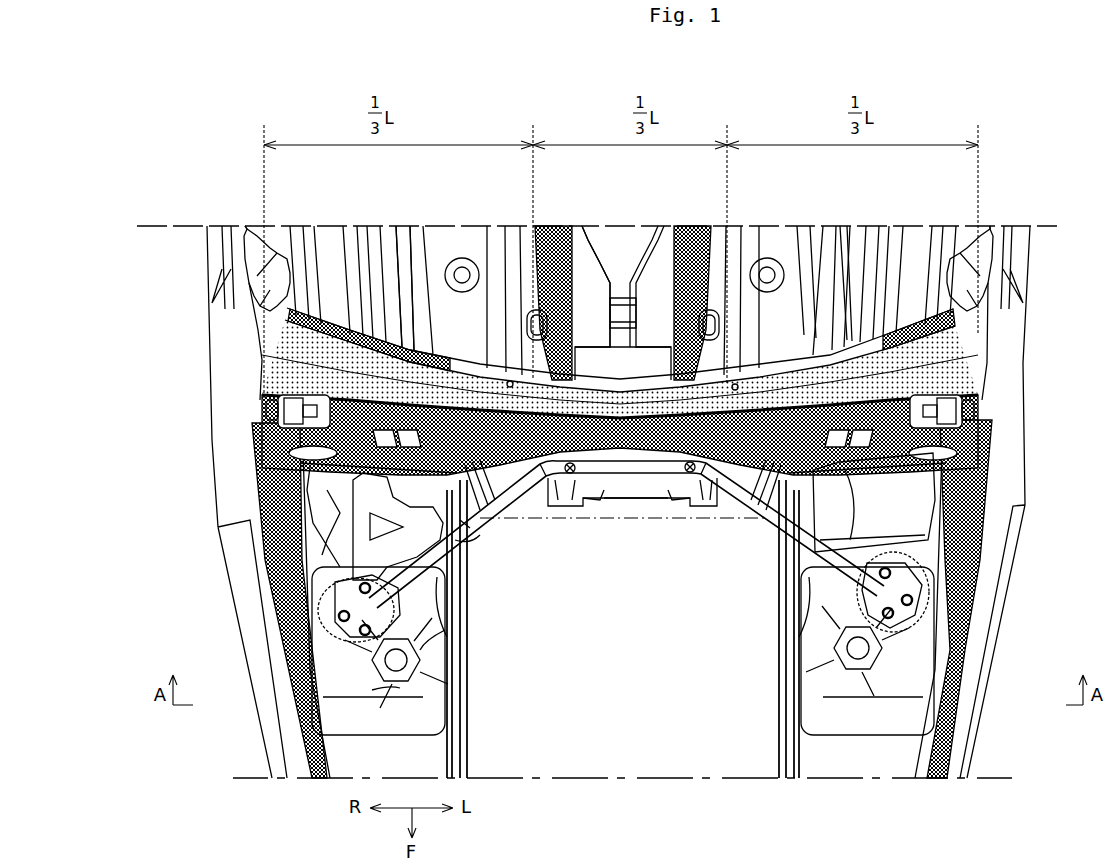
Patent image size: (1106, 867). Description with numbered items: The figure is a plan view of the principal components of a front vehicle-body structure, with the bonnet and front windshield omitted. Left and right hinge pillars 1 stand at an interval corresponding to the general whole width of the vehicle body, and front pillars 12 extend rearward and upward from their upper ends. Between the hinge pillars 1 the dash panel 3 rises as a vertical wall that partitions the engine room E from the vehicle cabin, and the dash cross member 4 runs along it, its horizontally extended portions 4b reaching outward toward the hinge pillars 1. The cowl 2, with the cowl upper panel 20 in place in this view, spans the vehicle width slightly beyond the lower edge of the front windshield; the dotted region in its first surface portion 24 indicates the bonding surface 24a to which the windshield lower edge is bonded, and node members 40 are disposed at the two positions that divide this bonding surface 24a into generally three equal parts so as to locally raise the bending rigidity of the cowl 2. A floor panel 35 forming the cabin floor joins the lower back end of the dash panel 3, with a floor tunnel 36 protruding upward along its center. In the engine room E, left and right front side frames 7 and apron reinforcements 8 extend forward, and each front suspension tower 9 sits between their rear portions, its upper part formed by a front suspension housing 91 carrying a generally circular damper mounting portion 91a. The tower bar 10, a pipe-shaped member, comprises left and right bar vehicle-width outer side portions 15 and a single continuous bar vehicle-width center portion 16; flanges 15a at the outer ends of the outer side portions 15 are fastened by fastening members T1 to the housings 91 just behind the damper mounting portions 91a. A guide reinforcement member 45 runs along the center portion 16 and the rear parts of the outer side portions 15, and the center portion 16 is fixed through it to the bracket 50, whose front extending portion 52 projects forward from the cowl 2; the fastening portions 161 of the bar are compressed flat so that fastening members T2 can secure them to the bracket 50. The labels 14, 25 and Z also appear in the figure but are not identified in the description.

The hinge pillar 1 is at (230, 333).
The cowl 2 is at (471, 352).
The dash panel 3 is at (266, 406).
The dash cross member 4 is at (428, 505).
The horizontally extended portion 4b is at (923, 483).
The front side frame 7 is at (467, 745).
The apron reinforcement 8 is at (247, 713).
The front suspension tower 9 is at (465, 670).
The tower bar 10 is at (478, 543).
The front pillar 12 is at (207, 270).
The hinge pillar 14 is at (280, 256).
The bar vehicle-width outer side portion 15 is at (626, 549).
The flange 15a is at (631, 615).
The bar vehicle-width center portion 16 is at (632, 533).
The cowl upper panel 20 is at (415, 345).
The first surface portion 24 is at (998, 350).
The bonding surface 24a is at (975, 373).
The cowl top panel 25 is at (893, 340).
The floor panel 35 is at (450, 240).
The floor tunnel 36 is at (580, 240).
The node member 40 is at (509, 381).
The guide reinforcement member 45 is at (601, 500).
The bracket 50 is at (632, 500).
The front extending portion 52 is at (686, 498).
The front suspension housing 91 is at (627, 665).
The damper mounting portion 91a is at (413, 657).
The fastening portion 161 is at (560, 490).
The fastening member T1 is at (632, 623).
The fastening member T2 is at (580, 500).
The region Z is at (712, 530).
The engine room E is at (615, 641).